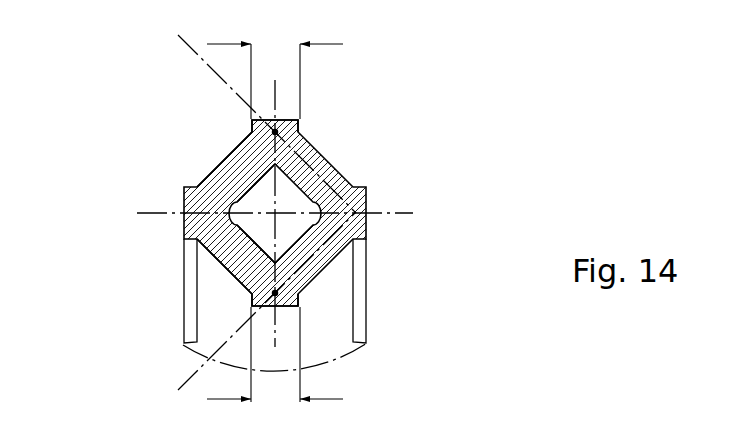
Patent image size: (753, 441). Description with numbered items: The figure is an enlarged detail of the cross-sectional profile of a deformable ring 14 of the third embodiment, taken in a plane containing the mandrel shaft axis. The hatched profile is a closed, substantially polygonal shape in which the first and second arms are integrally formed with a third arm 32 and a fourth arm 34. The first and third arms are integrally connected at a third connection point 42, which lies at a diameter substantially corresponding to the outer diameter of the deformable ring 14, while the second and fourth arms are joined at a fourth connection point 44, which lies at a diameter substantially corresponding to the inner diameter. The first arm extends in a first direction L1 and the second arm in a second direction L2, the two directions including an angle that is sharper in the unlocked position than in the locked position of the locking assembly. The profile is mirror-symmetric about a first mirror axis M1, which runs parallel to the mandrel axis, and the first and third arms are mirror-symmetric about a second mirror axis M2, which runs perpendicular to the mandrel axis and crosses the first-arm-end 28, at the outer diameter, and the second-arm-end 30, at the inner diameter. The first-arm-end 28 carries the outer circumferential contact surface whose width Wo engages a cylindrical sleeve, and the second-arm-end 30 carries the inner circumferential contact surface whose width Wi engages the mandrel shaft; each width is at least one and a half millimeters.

The deformable ring 14 is at (383, 320).
The first-arm-end 28 is at (292, 120).
The second-arm-end 30 is at (299, 306).
The third arm 32 is at (235, 160).
The fourth arm 34 is at (235, 265).
The third connection point 42 is at (277, 132).
The fourth connection point 44 is at (277, 293).
The first direction L1 is at (188, 47).
The second direction L2 is at (190, 377).
The first mirror axis M1 is at (397, 213).
The second mirror axis M2 is at (275, 98).
The width of the outer circumferential contact surface Wo is at (275, 68).
The width of the inner circumferential contact surface Wi is at (275, 359).